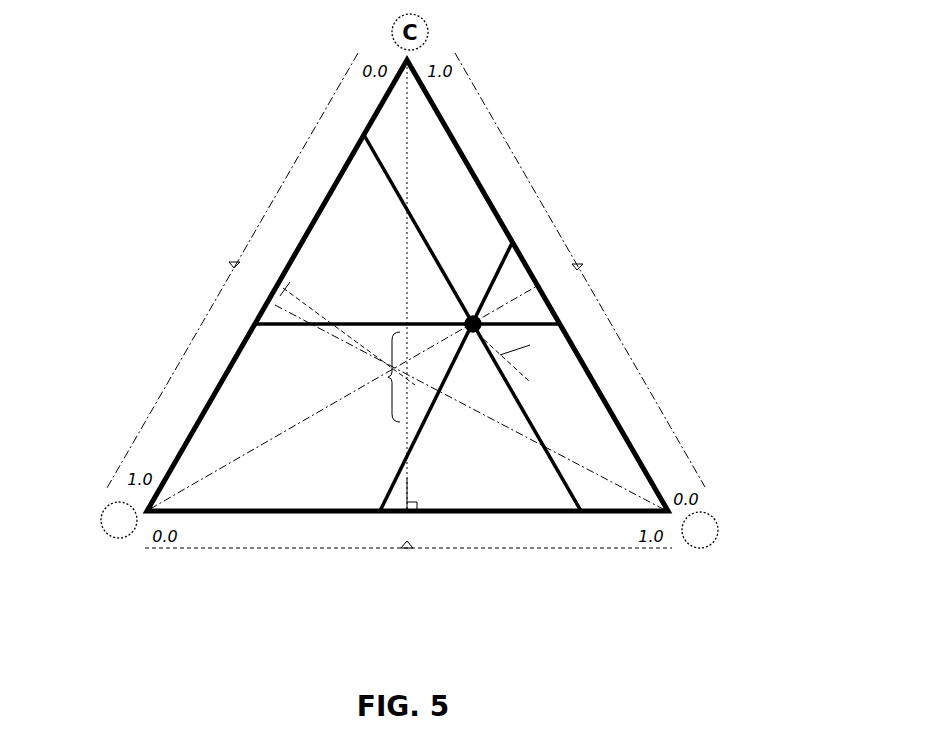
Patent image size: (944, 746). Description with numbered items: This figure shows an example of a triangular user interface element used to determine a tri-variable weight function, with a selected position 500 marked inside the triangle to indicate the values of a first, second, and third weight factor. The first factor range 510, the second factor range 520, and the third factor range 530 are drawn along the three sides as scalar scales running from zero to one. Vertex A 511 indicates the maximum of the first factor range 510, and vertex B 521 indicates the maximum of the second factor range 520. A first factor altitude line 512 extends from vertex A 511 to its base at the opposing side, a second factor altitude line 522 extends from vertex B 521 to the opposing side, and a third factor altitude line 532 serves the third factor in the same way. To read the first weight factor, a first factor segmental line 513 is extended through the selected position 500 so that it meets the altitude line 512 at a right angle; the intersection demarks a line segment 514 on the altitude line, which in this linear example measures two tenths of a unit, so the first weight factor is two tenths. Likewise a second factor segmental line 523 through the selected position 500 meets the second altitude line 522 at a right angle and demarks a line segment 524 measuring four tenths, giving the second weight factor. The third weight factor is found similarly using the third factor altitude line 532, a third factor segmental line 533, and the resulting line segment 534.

The selected position 500 is at (479, 312).
The first factor range 510 is at (200, 249).
The second factor range 520 is at (413, 590).
The third factor range 530 is at (603, 247).
The vertex A 511 is at (105, 535).
The vertex B 521 is at (714, 540).
The first factor altitude line 512 is at (252, 452).
The second factor altitude line 522 is at (598, 476).
The third factor altitude line 532 is at (404, 101).
The first factor segmental line 513 is at (388, 168).
The second factor segmental line 523 is at (418, 442).
The third factor segmental line 533 is at (385, 320).
The line segment 514 is at (550, 377).
The line segment 524 is at (324, 364).
The line segment 534 is at (361, 442).